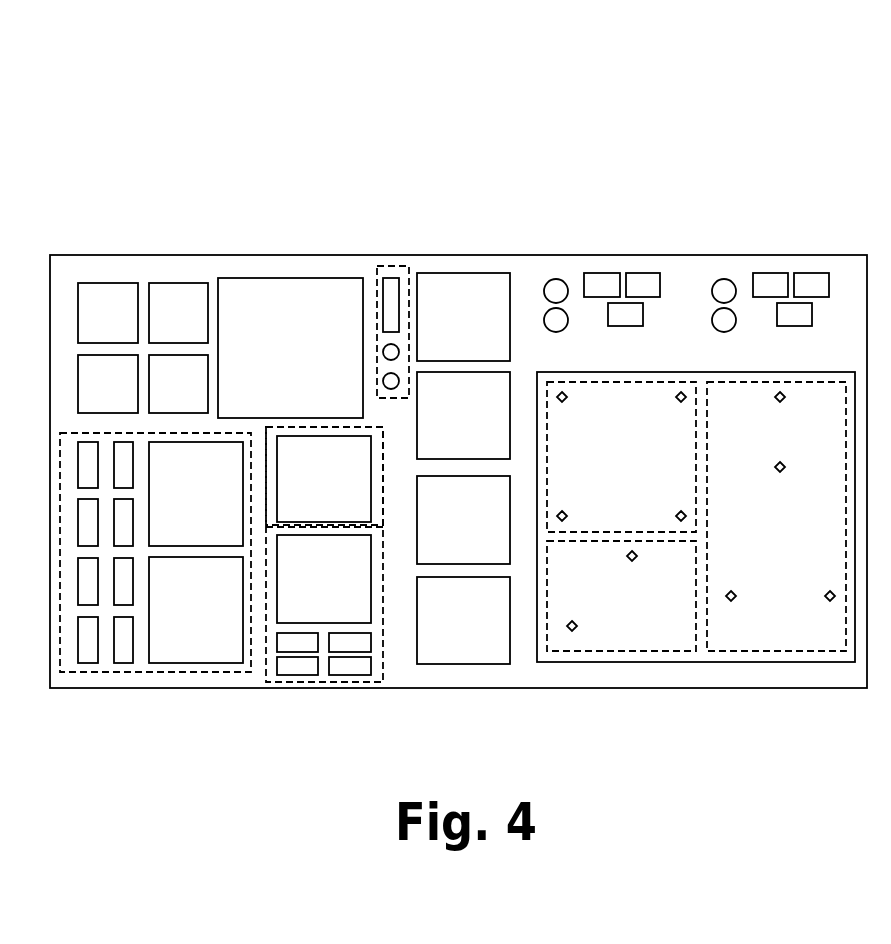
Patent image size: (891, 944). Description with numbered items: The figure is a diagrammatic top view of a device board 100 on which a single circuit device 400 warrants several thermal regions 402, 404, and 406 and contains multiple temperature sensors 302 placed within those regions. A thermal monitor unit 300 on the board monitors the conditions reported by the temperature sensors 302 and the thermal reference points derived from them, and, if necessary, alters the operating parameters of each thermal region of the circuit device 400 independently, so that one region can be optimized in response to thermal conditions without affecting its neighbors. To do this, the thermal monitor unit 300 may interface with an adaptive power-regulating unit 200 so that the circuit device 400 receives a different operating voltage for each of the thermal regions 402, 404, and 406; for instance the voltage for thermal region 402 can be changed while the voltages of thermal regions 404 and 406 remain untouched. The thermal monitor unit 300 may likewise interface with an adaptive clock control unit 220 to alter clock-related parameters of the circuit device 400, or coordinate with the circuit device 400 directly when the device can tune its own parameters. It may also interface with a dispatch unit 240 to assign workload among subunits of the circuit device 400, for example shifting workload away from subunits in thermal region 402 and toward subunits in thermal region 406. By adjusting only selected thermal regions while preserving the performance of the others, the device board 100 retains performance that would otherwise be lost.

The device board 100 is at (458, 110).
The adaptive power-regulating unit 200 is at (152, 673).
The adaptive clock control unit 220 is at (393, 265).
The dispatch unit 240 is at (383, 520).
The thermal monitor unit 300 is at (290, 682).
The temperature sensor 302 is at (730, 591).
The circuit device 400 is at (696, 429).
The thermal region 402 is at (630, 458).
The thermal region 404 is at (630, 596).
The thermal region 406 is at (779, 437).